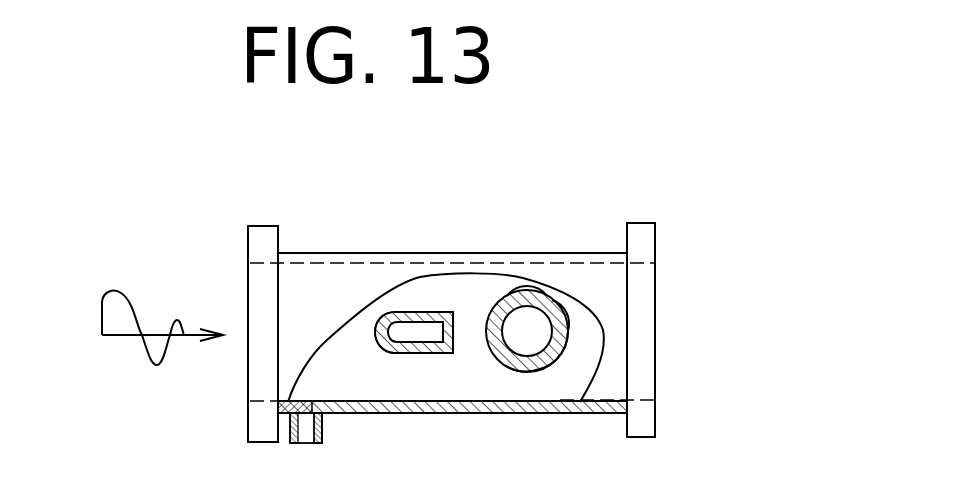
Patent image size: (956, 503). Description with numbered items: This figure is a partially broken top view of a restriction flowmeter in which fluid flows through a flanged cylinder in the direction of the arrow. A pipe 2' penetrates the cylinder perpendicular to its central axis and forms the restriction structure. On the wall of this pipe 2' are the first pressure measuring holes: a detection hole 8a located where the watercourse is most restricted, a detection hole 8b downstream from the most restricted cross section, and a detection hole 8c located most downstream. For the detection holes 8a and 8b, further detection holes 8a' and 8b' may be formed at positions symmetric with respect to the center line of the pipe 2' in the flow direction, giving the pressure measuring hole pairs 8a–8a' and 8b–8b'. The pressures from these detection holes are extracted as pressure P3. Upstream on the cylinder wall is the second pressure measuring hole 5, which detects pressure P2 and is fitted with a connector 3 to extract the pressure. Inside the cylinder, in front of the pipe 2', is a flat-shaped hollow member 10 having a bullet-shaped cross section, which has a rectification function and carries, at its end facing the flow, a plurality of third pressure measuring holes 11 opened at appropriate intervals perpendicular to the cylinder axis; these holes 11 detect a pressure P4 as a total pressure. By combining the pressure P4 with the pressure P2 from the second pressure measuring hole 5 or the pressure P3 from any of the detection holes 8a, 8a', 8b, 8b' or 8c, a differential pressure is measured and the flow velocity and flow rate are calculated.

The pipe 2' is at (514, 280).
The connector 3 is at (291, 415).
The second pressure measuring hole 5 is at (322, 425).
The detection hole 8a is at (510, 418).
The detection hole 8a' is at (537, 247).
The detection hole 8b is at (573, 420).
The detection hole 8b' is at (586, 275).
The detection hole 8c is at (562, 332).
The hollow member 10 is at (427, 312).
The third pressure measuring holes 11 is at (378, 340).